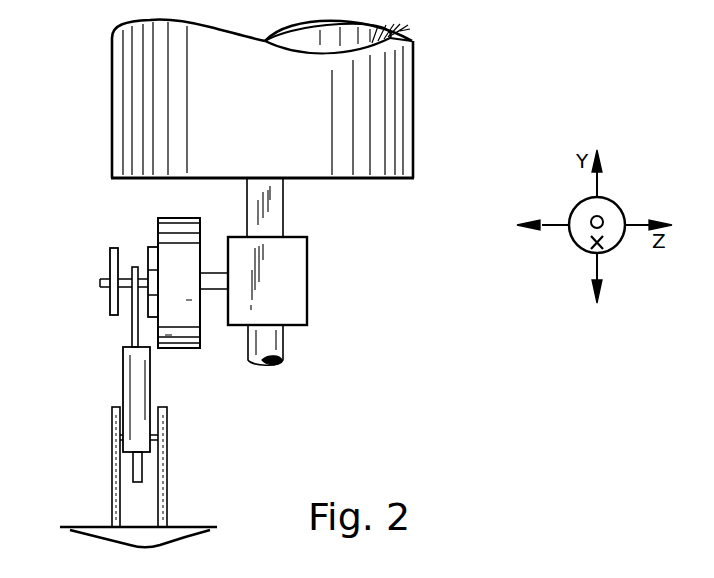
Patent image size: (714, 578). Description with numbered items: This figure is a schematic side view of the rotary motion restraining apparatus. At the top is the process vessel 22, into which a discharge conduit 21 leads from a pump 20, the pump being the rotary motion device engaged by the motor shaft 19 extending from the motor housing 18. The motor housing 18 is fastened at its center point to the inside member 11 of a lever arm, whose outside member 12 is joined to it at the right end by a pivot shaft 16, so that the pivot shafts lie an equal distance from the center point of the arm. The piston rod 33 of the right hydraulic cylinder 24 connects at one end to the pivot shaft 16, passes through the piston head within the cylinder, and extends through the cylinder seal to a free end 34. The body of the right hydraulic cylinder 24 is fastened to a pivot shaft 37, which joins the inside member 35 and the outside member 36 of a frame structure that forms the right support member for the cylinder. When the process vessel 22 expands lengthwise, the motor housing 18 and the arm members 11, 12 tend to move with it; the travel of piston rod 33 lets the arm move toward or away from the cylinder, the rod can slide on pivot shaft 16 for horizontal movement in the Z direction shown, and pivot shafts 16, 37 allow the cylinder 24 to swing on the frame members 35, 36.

The inside member 11 is at (150, 246).
The outside member 12 is at (113, 246).
The pivot shaft 16 is at (102, 280).
The motor housing 18 is at (172, 218).
The motor shaft 19 is at (213, 293).
The pump 20 is at (307, 292).
The discharge conduit 21 is at (283, 208).
The process vessel 22 is at (413, 97).
The right hydraulic cylinder 24 is at (123, 377).
The piston rod 33 is at (132, 322).
The free end 34 is at (141, 484).
The inside member 35 is at (168, 468).
The outside member 36 is at (112, 477).
The pivot shaft 37 is at (122, 443).